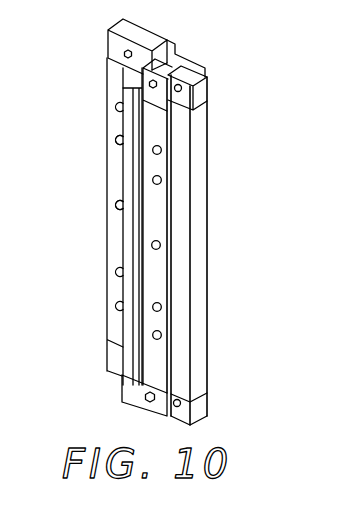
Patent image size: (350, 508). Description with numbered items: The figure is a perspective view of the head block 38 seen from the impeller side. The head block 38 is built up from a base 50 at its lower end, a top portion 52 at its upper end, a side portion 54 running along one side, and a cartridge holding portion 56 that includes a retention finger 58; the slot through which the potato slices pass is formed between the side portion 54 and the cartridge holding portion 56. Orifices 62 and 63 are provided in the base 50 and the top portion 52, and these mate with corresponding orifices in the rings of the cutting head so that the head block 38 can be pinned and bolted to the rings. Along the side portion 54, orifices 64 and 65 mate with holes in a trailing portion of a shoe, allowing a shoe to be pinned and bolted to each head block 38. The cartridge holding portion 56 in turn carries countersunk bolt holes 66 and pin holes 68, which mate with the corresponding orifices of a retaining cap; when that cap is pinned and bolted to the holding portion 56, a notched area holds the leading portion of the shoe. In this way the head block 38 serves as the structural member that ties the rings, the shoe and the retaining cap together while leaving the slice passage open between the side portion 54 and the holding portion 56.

The head block 38 is at (175, 214).
The base 50 is at (117, 363).
The top portion 52 is at (173, 43).
The side portion 54 is at (117, 78).
The cartridge holding portion 56 is at (198, 281).
The retention finger 58 is at (127, 121).
The orifice 62 is at (201, 91).
The orifice 63 is at (165, 50).
The orifice 64 is at (120, 205).
The orifice 65 is at (120, 143).
The countersunk bolt hole 66 is at (161, 336).
The pin hole 68 is at (161, 311).